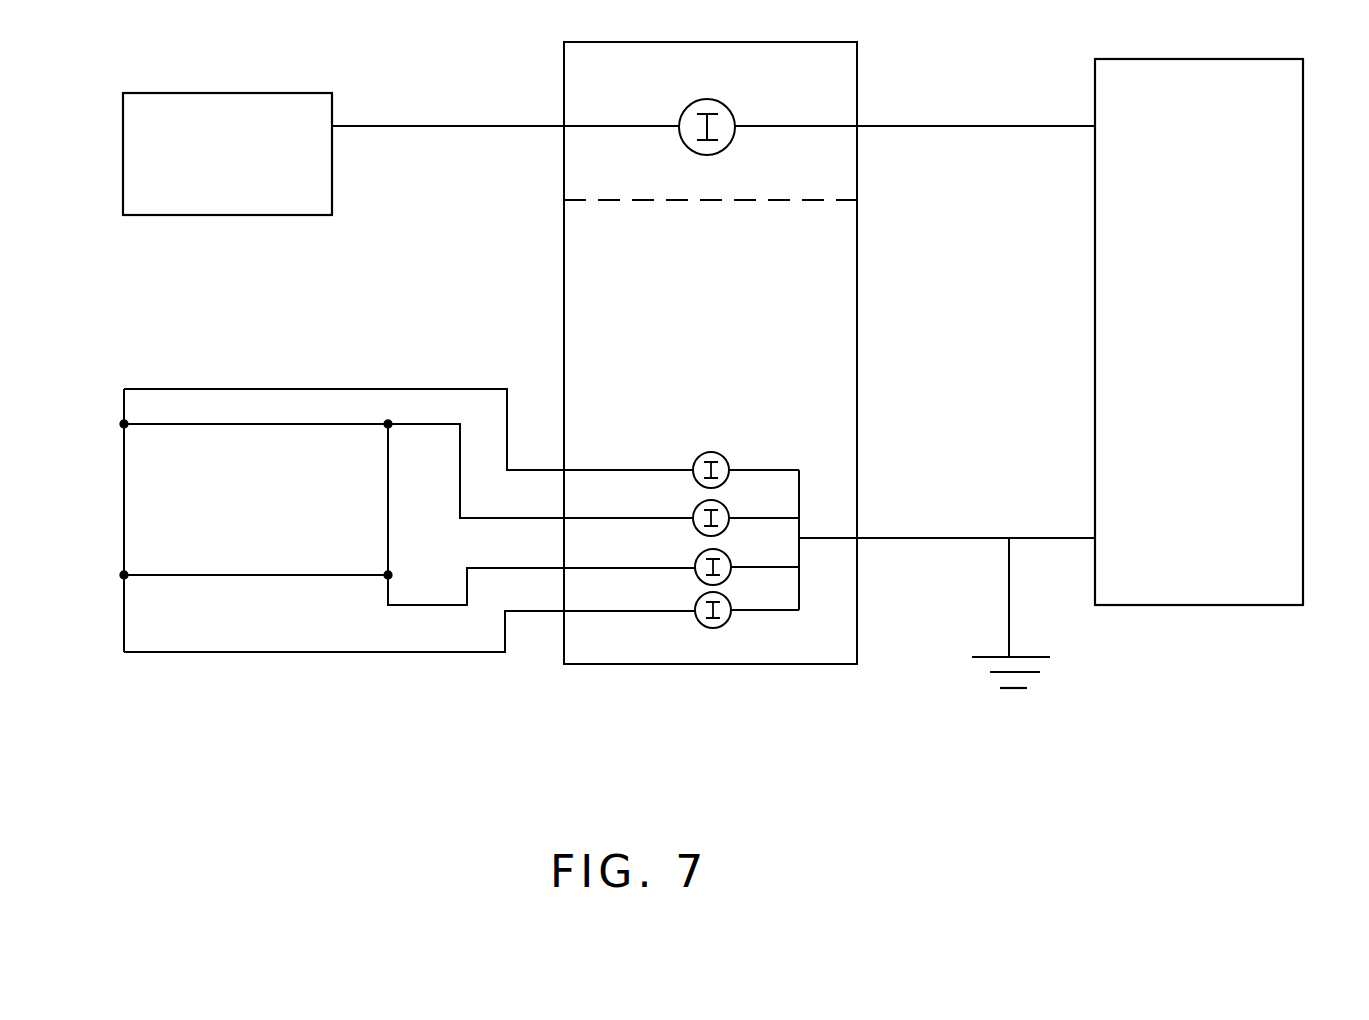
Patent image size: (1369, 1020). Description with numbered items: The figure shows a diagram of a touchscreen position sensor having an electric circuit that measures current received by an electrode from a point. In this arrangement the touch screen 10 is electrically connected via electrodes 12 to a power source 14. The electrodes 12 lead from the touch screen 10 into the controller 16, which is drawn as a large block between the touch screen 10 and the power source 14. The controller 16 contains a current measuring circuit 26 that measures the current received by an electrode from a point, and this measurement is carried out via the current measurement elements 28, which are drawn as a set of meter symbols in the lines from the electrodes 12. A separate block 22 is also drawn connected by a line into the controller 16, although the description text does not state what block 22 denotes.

The touch screen 10 is at (150, 508).
The electrodes 12 is at (119, 420).
The power source 14 is at (1278, 510).
The controller 16 is at (868, 274).
The power supply 22 is at (241, 163).
The current measuring circuit 26 is at (720, 104).
The current measurement elements 28 is at (657, 478).